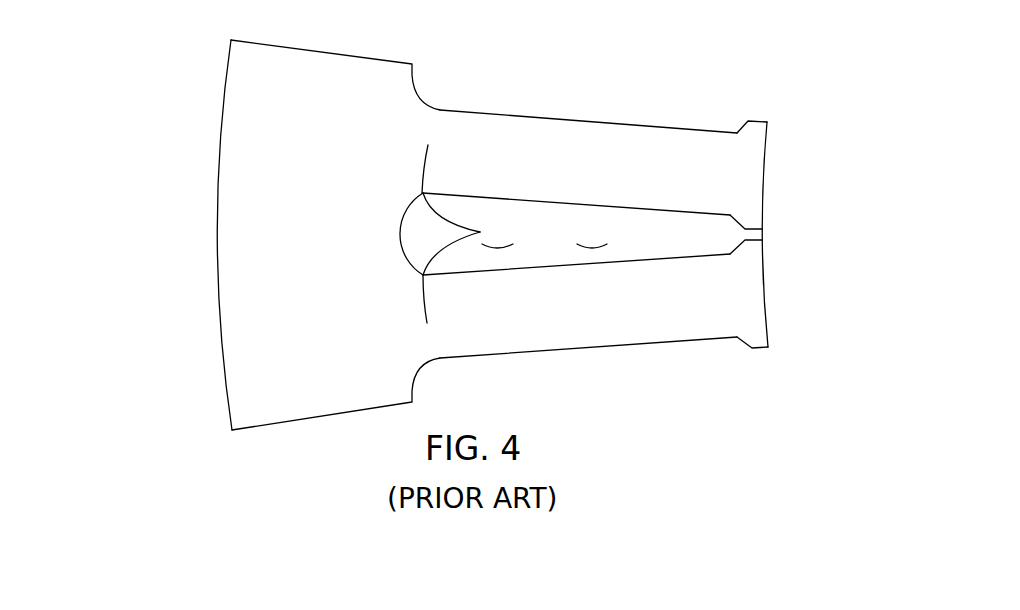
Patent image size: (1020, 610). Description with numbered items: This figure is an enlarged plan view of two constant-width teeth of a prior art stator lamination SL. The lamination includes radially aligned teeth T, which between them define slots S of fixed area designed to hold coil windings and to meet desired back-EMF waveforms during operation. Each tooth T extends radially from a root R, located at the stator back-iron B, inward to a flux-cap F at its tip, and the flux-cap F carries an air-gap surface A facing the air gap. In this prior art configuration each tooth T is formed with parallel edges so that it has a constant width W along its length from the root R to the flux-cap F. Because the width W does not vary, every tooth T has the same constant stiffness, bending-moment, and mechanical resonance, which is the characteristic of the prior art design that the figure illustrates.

The stator lamination SL is at (224, 103).
The stator back-iron B is at (217, 280).
The slot S is at (398, 246).
The root R is at (515, 234).
The constant width W is at (513, 199).
The tooth T is at (673, 127).
The flux-cap F is at (765, 120).
The air-gap surface A is at (763, 192).